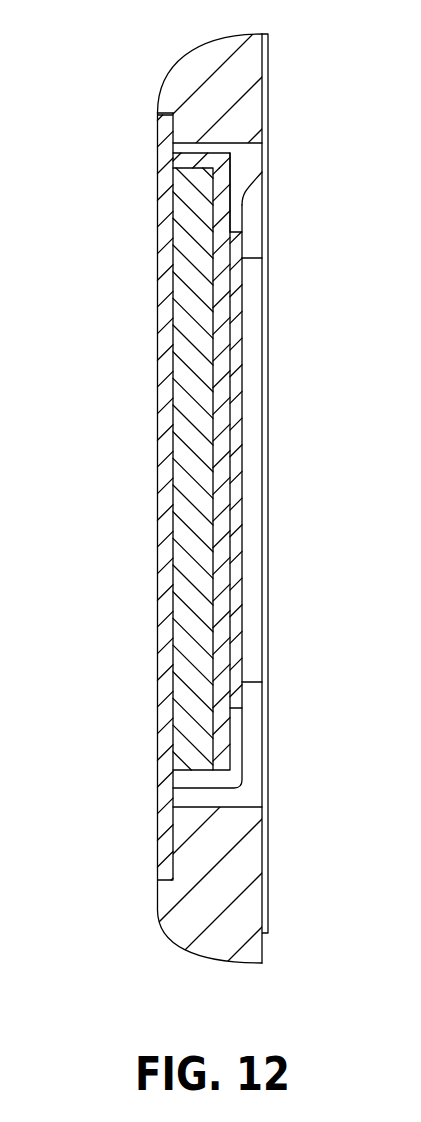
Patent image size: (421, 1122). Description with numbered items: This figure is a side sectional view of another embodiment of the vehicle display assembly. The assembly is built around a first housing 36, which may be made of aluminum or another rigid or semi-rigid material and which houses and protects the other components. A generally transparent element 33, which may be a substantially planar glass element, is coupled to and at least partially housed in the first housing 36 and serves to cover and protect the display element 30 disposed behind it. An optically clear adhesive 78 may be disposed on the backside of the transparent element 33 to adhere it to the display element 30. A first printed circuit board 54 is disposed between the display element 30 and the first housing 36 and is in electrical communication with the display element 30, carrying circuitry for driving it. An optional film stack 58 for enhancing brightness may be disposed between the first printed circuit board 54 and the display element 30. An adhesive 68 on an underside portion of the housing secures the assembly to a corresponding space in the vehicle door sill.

The first housing 36 is at (165, 74).
The display element 30 is at (180, 217).
The transparent element 33 is at (158, 302).
The film stack 58 is at (232, 162).
The first printed circuit board 54 is at (242, 348).
The adhesive 68 is at (268, 733).
The optically clear adhesive 78 is at (173, 838).